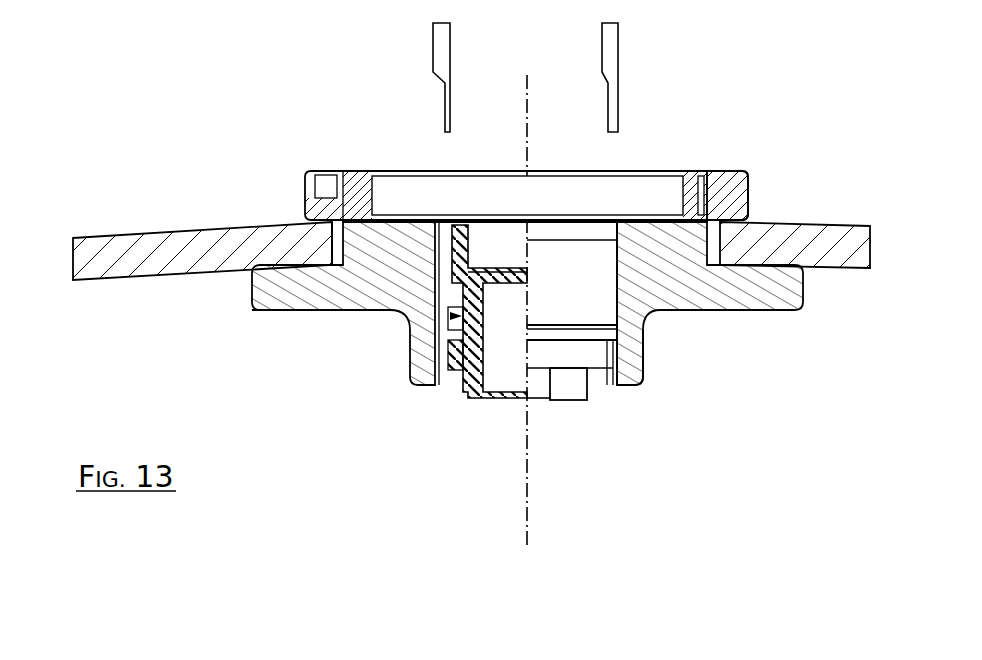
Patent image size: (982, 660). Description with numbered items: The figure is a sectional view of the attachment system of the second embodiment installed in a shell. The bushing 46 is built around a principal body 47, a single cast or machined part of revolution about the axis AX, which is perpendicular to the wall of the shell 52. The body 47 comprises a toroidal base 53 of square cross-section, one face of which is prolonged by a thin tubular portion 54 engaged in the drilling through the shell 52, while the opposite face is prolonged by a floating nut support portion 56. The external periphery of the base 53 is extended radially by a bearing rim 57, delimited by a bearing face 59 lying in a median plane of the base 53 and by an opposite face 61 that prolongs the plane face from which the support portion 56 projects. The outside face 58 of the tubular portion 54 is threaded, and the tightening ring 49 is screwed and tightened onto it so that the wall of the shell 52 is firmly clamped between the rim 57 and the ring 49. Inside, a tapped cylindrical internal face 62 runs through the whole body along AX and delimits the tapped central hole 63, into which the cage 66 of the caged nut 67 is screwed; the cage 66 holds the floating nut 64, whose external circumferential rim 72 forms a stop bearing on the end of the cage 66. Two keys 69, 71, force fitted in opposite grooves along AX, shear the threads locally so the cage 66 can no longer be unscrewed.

The bushing 46 is at (352, 96).
The principal body 47 is at (762, 378).
The tightening ring 49 is at (728, 183).
The shell 52 is at (202, 238).
The toroidal base 53 is at (510, 299).
The tubular portion 54 is at (695, 183).
The floating nut support portion 56 is at (630, 342).
The bearing rim 57 is at (285, 293).
The outside face 58 is at (757, 225).
The bearing face 59 is at (290, 262).
The opposite face 61 is at (327, 310).
The tapped cylindrical internal face 62 is at (617, 253).
The tapped central hole 63 is at (497, 215).
The floating nut 64 is at (570, 388).
The cage 66 is at (583, 278).
The caged nut 67 is at (625, 397).
The key 69 is at (440, 50).
The key 71 is at (610, 48).
The external circumferential rim 72 is at (450, 350).
The axis AX is at (527, 518).